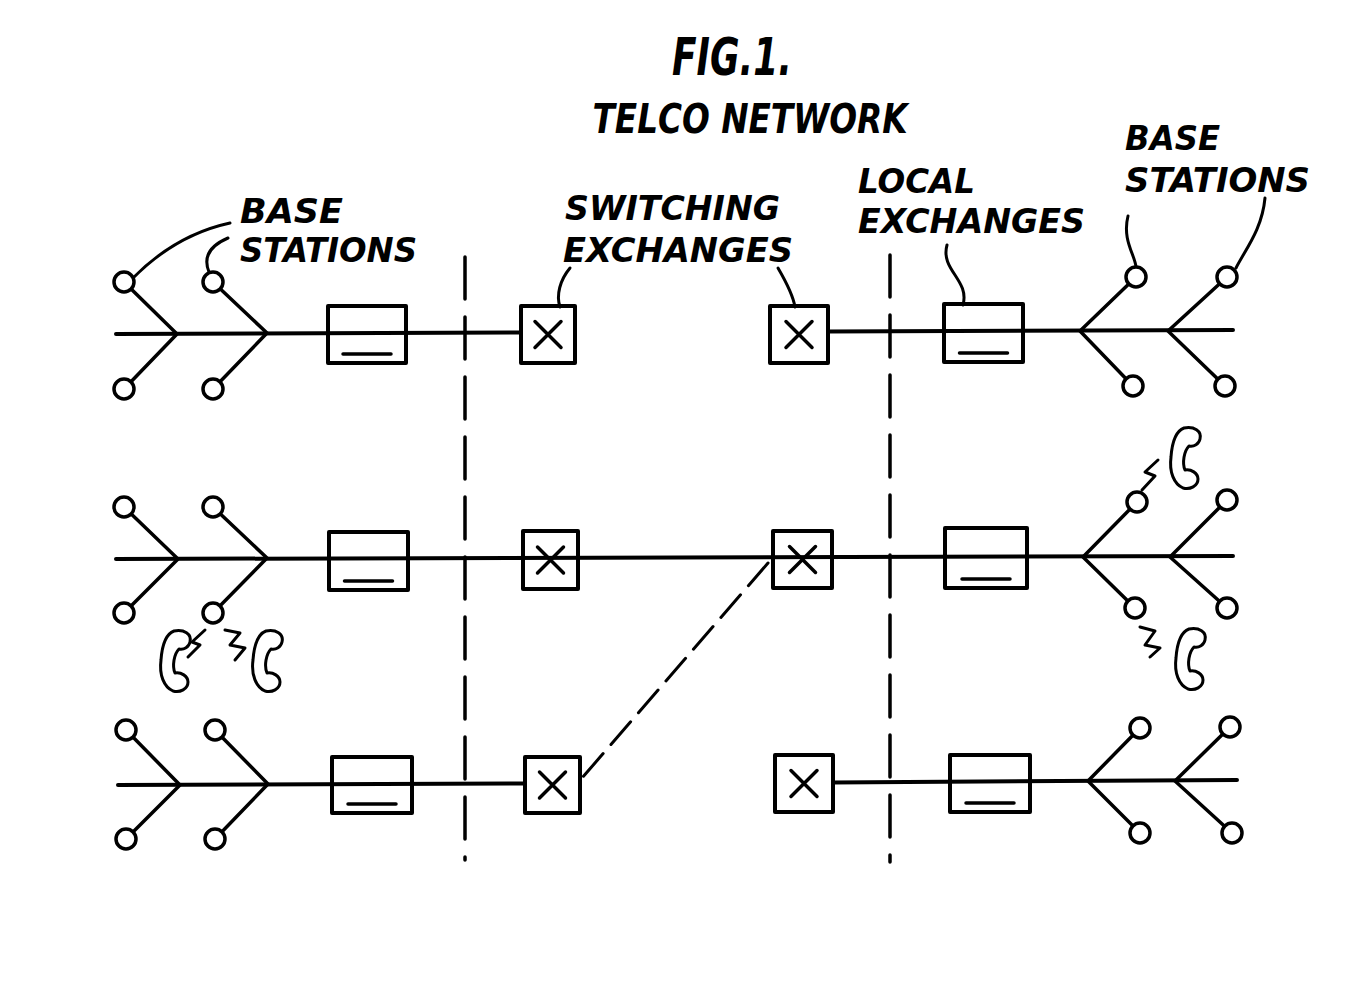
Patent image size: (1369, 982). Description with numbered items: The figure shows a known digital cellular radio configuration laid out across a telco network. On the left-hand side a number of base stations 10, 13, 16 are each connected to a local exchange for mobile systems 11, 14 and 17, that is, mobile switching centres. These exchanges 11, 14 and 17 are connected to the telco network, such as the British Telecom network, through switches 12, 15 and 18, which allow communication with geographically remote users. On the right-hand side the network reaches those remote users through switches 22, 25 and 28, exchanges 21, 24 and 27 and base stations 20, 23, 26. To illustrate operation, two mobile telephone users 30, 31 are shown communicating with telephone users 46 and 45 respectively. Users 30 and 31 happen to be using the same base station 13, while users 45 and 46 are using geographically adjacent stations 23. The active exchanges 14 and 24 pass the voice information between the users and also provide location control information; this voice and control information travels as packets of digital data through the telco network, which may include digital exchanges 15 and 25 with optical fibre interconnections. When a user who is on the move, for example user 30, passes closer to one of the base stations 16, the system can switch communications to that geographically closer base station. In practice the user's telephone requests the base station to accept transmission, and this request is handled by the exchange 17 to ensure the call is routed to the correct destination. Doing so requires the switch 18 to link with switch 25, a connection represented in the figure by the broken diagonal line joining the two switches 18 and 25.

The base stations 10 is at (133, 284).
The local exchange for mobile systems 11 is at (357, 363).
The switch 12 is at (567, 363).
The base station 13 is at (204, 500).
The local exchange for mobile systems 14 is at (368, 590).
The switch 15 is at (562, 589).
The base stations 16 is at (206, 726).
The local exchange for mobile systems 17 is at (363, 813).
The switch 18 is at (563, 813).
The base stations 20 is at (1222, 268).
The exchange 21 is at (1017, 362).
The switch 22 is at (795, 362).
The base stations 23 is at (1147, 506).
The exchange 24 is at (1017, 588).
The switch 25 is at (807, 588).
The base stations 26 is at (1222, 723).
The exchange 27 is at (1018, 812).
The switch 28 is at (802, 812).
The mobile telephone user 30 is at (160, 672).
The mobile telephone user 31 is at (282, 680).
The telephone user 45 is at (1200, 450).
The telephone user 46 is at (1205, 660).